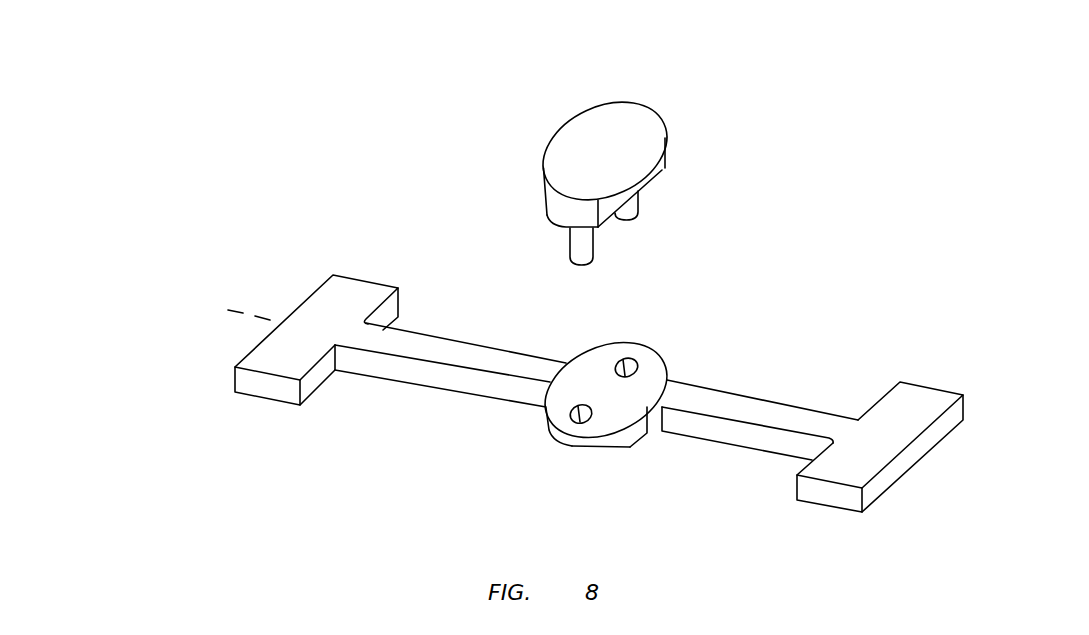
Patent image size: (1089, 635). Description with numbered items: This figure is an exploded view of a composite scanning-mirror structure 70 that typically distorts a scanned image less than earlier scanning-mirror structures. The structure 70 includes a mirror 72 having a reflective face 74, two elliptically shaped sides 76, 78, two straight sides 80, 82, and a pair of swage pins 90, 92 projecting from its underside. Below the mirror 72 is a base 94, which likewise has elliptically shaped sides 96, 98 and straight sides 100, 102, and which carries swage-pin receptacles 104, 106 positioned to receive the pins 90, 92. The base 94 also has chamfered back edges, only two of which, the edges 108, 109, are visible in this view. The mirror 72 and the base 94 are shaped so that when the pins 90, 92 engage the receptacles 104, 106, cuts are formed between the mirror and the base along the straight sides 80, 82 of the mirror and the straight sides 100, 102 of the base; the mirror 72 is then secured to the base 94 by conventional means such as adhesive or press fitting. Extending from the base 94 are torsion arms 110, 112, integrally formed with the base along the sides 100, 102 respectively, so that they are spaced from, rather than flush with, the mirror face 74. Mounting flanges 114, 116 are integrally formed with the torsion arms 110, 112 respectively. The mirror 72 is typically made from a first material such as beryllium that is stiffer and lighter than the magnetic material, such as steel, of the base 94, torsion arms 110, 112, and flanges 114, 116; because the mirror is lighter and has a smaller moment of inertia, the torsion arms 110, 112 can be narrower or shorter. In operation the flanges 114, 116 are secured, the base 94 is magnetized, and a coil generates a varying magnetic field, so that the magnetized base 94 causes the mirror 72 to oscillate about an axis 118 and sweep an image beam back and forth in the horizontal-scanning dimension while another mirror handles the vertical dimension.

The composite scanning-mirror structure 70 is at (892, 172).
The mirror 72 is at (628, 68).
The reflective face 74 is at (585, 133).
The elliptically shaped side 76 is at (650, 107).
The elliptically shaped side 78 is at (558, 228).
The straight side 80 is at (543, 172).
The straight side 82 is at (661, 171).
The swage pin 90 is at (636, 221).
The swage pin 92 is at (582, 266).
The base 94 is at (571, 456).
The elliptically shaped side 96 is at (628, 343).
The elliptically shaped side 98 is at (545, 423).
The straight side 100 is at (552, 362).
The straight side 102 is at (668, 378).
The swage-pin receptacle 104 is at (637, 363).
The swage-pin receptacle 106 is at (592, 413).
The chamfered back edge 108 is at (562, 443).
The chamfered back edge 109 is at (640, 442).
The torsion arm 110 is at (447, 390).
The torsion arm 112 is at (730, 445).
The mounting flange 114 is at (335, 273).
The mounting flange 116 is at (930, 387).
The axis 118 is at (945, 448).